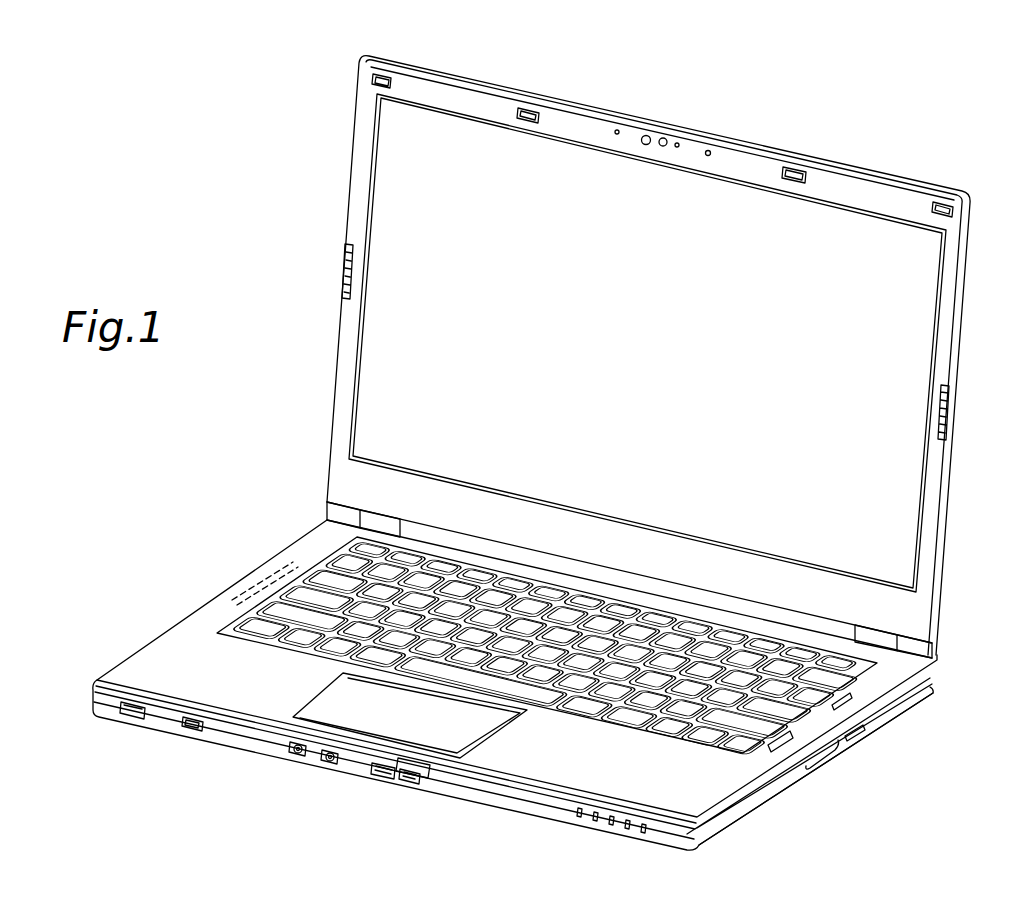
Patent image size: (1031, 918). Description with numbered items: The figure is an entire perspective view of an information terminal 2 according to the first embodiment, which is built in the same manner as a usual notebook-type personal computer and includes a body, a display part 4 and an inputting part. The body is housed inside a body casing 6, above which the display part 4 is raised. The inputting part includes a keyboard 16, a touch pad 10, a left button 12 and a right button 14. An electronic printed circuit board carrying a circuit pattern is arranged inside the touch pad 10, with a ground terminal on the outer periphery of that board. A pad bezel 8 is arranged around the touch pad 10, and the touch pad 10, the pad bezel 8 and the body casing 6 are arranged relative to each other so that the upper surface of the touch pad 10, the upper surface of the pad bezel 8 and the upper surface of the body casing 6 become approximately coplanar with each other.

The information terminal 2 is at (908, 83).
The display part 4 is at (923, 275).
The body casing 6 is at (890, 675).
The pad bezel 8 is at (487, 745).
The touch pad 10 is at (293, 747).
The left button 12 is at (352, 729).
The right button 14 is at (410, 742).
The keyboard 16 is at (790, 700).